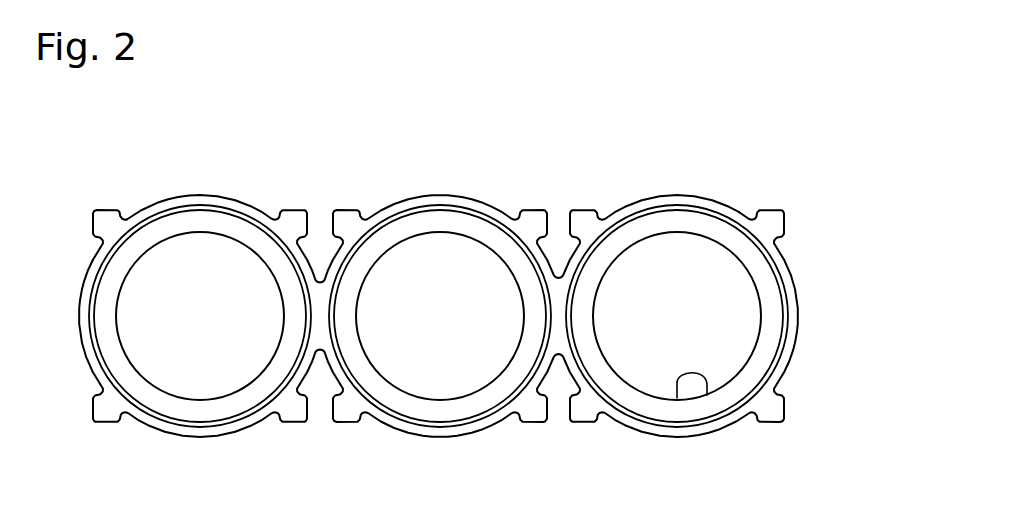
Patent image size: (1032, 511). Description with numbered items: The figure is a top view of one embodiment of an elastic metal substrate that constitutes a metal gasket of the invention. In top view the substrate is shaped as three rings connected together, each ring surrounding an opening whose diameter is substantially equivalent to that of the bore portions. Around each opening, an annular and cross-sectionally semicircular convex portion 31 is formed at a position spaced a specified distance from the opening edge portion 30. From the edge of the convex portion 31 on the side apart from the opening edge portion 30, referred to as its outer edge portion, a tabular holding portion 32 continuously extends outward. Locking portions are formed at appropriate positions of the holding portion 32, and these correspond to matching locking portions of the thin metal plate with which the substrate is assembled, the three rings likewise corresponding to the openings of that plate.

The convex portion 31 is at (792, 310).
The holding portion 32 is at (787, 358).
The opening edge portion 30 is at (707, 395).